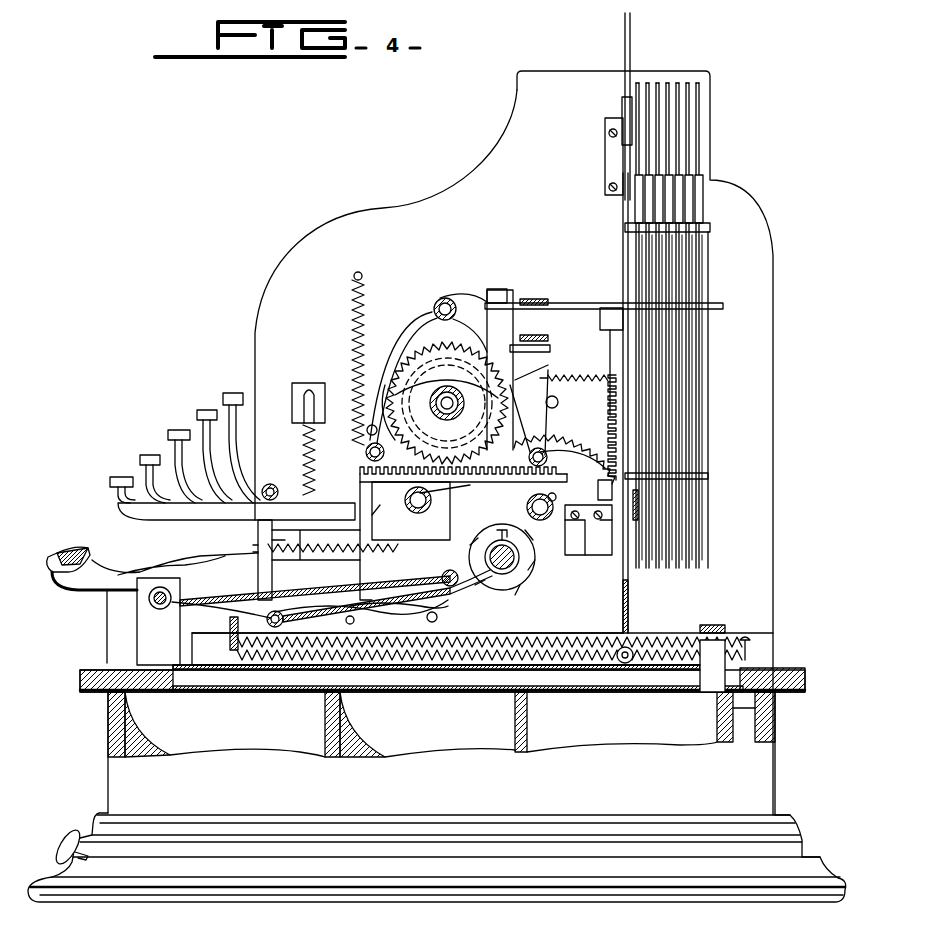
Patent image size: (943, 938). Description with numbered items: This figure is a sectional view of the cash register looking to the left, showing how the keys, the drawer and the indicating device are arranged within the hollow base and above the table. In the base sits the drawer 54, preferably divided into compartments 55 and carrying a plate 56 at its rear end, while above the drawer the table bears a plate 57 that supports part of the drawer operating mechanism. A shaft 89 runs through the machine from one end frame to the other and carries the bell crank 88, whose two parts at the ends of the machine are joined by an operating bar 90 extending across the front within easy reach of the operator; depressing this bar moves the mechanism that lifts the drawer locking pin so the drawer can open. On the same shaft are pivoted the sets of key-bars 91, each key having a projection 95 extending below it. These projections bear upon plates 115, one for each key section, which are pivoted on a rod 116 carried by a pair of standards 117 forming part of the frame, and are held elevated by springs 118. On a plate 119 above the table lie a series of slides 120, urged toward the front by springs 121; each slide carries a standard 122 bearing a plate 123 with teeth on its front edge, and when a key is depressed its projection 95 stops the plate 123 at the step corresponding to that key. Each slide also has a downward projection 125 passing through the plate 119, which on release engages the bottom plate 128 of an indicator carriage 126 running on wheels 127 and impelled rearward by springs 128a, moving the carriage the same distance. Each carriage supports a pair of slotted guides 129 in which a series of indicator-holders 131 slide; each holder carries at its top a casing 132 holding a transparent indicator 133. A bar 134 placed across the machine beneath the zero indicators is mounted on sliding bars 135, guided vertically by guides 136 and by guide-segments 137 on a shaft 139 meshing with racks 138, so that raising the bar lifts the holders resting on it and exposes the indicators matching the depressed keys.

The drawer 54 is at (108, 730).
The compartments 55 is at (375, 735).
The plate 56 is at (562, 705).
The plate 57 is at (470, 708).
The bell crank 88 is at (60, 592).
The shaft 89 is at (432, 505).
The operating bar 90 is at (65, 552).
The key-bars 91 is at (240, 465).
The projection 95 is at (256, 533).
The plates 115 is at (216, 592).
The rod 116 is at (160, 609).
The standards 117 is at (137, 628).
The springs 118 is at (238, 608).
The plate 119 is at (294, 690).
The slides 120 is at (548, 633).
The springs 121 is at (478, 640).
The standard 122 is at (370, 619).
The plate 123 is at (312, 605).
The projection 125 is at (698, 692).
The indicator carriage 126 is at (628, 603).
The wheels 127 is at (625, 663).
The bottom plate 128 is at (650, 660).
The springs 128a is at (738, 645).
The guides 129 is at (717, 475).
The indicator-holders 131 is at (708, 378).
The casing 132 is at (700, 214).
The indicator 133 is at (632, 42).
The bar 134 is at (638, 505).
The sliding bars 135 is at (605, 240).
The guides 136 is at (600, 318).
The guide-segments 137 is at (608, 408).
The racks 138 is at (575, 452).
The shaft 139 is at (540, 520).